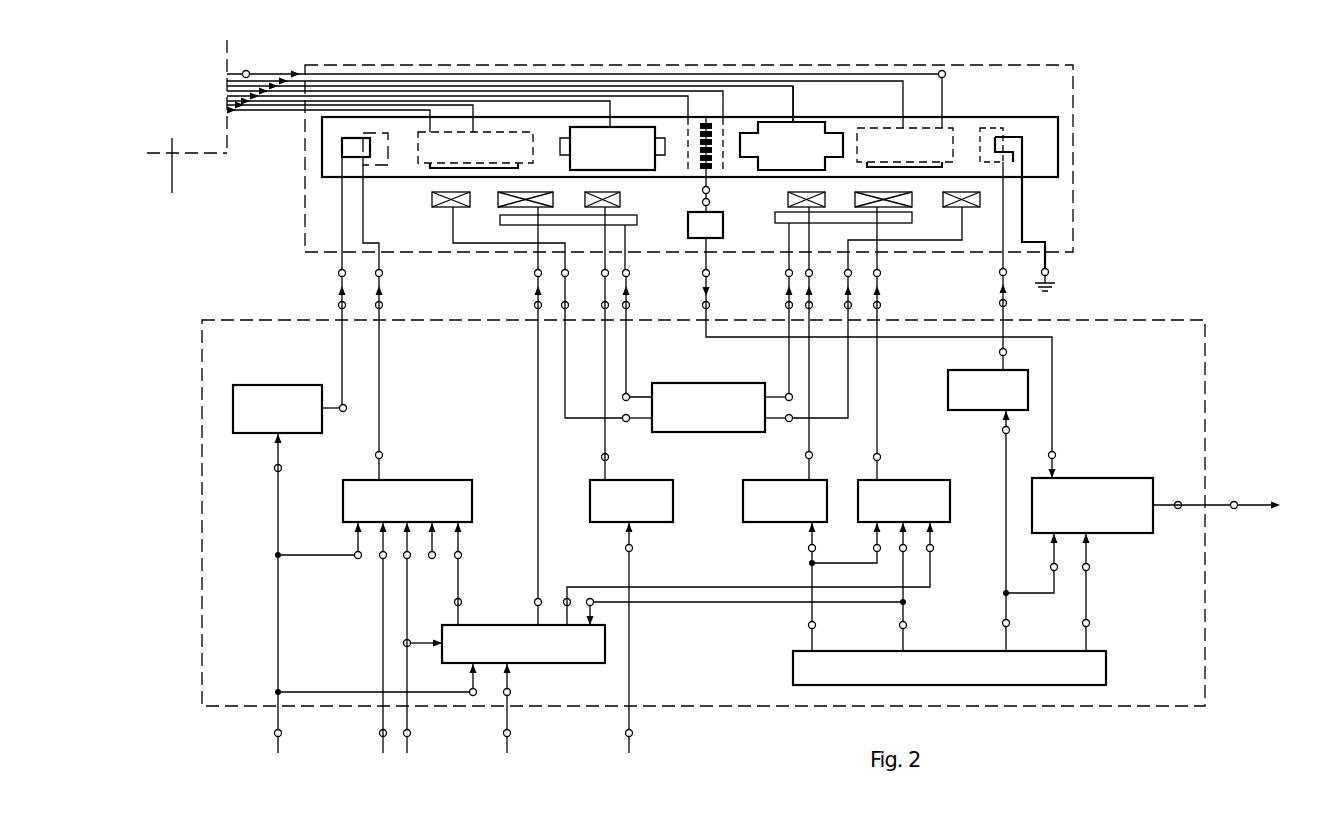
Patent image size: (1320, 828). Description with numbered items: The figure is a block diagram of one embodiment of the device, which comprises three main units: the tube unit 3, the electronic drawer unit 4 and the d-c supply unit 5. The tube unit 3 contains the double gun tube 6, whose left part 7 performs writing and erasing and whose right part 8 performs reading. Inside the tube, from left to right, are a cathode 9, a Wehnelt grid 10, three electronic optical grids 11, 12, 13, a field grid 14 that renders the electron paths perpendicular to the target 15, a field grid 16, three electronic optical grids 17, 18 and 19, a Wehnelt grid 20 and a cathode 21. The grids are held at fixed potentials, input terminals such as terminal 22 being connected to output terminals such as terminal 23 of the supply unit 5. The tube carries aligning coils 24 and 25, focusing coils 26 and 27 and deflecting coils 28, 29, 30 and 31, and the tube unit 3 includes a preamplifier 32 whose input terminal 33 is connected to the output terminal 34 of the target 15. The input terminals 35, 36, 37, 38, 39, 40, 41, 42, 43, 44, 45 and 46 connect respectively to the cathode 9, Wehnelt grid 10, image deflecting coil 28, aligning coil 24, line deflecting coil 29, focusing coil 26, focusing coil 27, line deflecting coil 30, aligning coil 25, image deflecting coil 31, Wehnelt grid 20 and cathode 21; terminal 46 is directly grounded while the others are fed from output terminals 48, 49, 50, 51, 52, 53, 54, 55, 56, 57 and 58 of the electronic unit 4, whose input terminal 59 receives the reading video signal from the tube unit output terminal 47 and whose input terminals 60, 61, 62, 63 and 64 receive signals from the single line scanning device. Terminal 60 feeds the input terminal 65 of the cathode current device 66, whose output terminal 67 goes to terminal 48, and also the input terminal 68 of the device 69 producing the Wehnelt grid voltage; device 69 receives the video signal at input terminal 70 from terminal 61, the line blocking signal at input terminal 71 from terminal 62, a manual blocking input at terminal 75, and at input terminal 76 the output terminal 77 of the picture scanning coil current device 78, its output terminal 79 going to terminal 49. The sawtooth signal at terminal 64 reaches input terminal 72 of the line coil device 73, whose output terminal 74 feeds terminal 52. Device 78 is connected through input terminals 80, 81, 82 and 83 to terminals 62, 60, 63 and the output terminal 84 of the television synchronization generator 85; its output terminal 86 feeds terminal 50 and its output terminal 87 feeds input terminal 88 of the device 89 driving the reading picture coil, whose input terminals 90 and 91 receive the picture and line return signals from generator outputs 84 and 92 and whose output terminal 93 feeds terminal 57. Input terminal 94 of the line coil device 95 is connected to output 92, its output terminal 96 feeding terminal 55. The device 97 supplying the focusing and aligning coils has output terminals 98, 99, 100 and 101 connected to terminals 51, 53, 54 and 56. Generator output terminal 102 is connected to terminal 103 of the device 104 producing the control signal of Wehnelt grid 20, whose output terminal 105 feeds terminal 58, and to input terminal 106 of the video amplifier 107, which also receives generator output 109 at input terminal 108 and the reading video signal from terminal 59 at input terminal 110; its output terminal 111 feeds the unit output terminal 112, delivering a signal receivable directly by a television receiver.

The tube unit 3 is at (315, 193).
The electronic drawer unit 4 is at (218, 533).
The d-c supply unit 5 is at (187, 133).
The double gun tube 6 is at (745, 117).
The writing and erasing part 7 is at (543, 117).
The reading part (reading gun) 8 is at (850, 117).
The cathode 9 is at (342, 141).
The Wehnelt grid 10 is at (375, 133).
The electronic optical grid 11 is at (433, 130).
The electronic optical grid 12 is at (457, 135).
The electronic optical grid 13 is at (590, 131).
The field grid 14 is at (686, 143).
The target 15 is at (705, 120).
The field grid 16 is at (728, 148).
The electronic optical grid 17 is at (811, 121).
The electronic optical grid 18 is at (914, 130).
The electronic optical grid 19 is at (922, 155).
The Wehnelt grid 20 is at (985, 128).
The cathode 21 is at (1015, 135).
The input terminal 22 is at (947, 69).
The output terminal 23 is at (250, 70).
The aligning coil 24 is at (430, 198).
The aligning coil 25 is at (983, 196).
The focusing coil 26 is at (510, 228).
The focusing coil 27 is at (910, 226).
The image deflecting coil 28 is at (507, 201).
The line deflecting coil 29 is at (622, 198).
The line deflecting coil 30 is at (792, 201).
The image deflecting coil 31 is at (915, 202).
The preamplifier 32 is at (692, 226).
The input terminal 33 is at (711, 203).
The output terminal 34 is at (701, 190).
The input terminal 35 is at (337, 273).
The input terminal 36 is at (383, 273).
The input terminal 37 is at (534, 273).
The input terminal 38 is at (563, 279).
The input terminal 39 is at (569, 305).
The input terminal 40 is at (631, 273).
The input terminal 41 is at (784, 273).
The input terminal 42 is at (824, 365).
The input terminal 43 is at (846, 273).
The input terminal 44 is at (881, 273).
The input terminal 45 is at (995, 277).
The input terminal 46 is at (1052, 268).
The output terminal 47 is at (703, 276).
The output terminal 48 is at (337, 305).
The output terminal 49 is at (383, 305).
The output terminal 50 is at (534, 305).
The output terminal 51 is at (563, 313).
The output terminal 52 is at (603, 280).
The output terminal 53 is at (631, 305).
The output terminal 54 is at (786, 303).
The output terminal 55 is at (811, 312).
The output terminal 56 is at (850, 313).
The output terminal 57 is at (882, 305).
The output terminal 58 is at (1008, 303).
The input terminal 59 is at (711, 305).
The input terminal 60 is at (273, 735).
The input terminal 61 is at (378, 735).
The input terminal 62 is at (412, 733).
The input terminal 63 is at (512, 733).
The input terminal 64 is at (634, 733).
The input terminal 65 is at (273, 468).
The cathode current device 66 is at (255, 398).
The output terminal 67 is at (339, 404).
The input terminal 68 is at (352, 551).
The Wehnelt grid voltage device 69 is at (437, 487).
The input terminal 70 is at (378, 557).
The input terminal 71 is at (402, 562).
The input terminal 72 is at (634, 551).
The line coil scanning current device 73 is at (613, 522).
The output terminal 74 is at (600, 457).
The blocking terminal 75 is at (432, 560).
The input terminal 76 is at (463, 554).
The output terminal 77 is at (463, 600).
The picture scanning coil current device 78 is at (581, 652).
The output terminal 79 is at (386, 449).
The input terminal 80 is at (402, 646).
The input terminal 81 is at (468, 690).
The input terminal 82 is at (512, 692).
The input terminal 83 is at (600, 609).
The output terminal 84 is at (898, 625).
The television synchronization generator 85 is at (965, 662).
The output terminal 86 is at (533, 602).
The output terminal 87 is at (564, 596).
The input terminal 88 is at (935, 550).
The picture scanning coil current device 89 is at (932, 497).
The input terminal 90 is at (908, 546).
The input terminal 91 is at (872, 548).
The output terminal 92 is at (807, 625).
The output terminal 93 is at (885, 455).
The input terminal 94 is at (807, 548).
The line coil scanning current device 95 is at (765, 502).
The output terminal 96 is at (814, 456).
The focusing and aligning coil supply device 97 is at (706, 393).
The output terminal 98 is at (630, 423).
The output terminal 99 is at (631, 392).
The output terminal 100 is at (786, 392).
The output terminal 101 is at (787, 423).
The output terminal 102 is at (1001, 621).
The terminal 103 is at (1001, 430).
The Wehnelt grid control signal device 104 is at (1030, 386).
The output terminal 105 is at (957, 363).
The input terminal 106 is at (1049, 568).
The television video signal amplifier 107 is at (1118, 488).
The input terminal 108 is at (1091, 567).
The output terminal 109 is at (1091, 622).
The input terminal 110 is at (1058, 452).
The output terminal 111 is at (1178, 512).
The output terminal 112 is at (1234, 498).